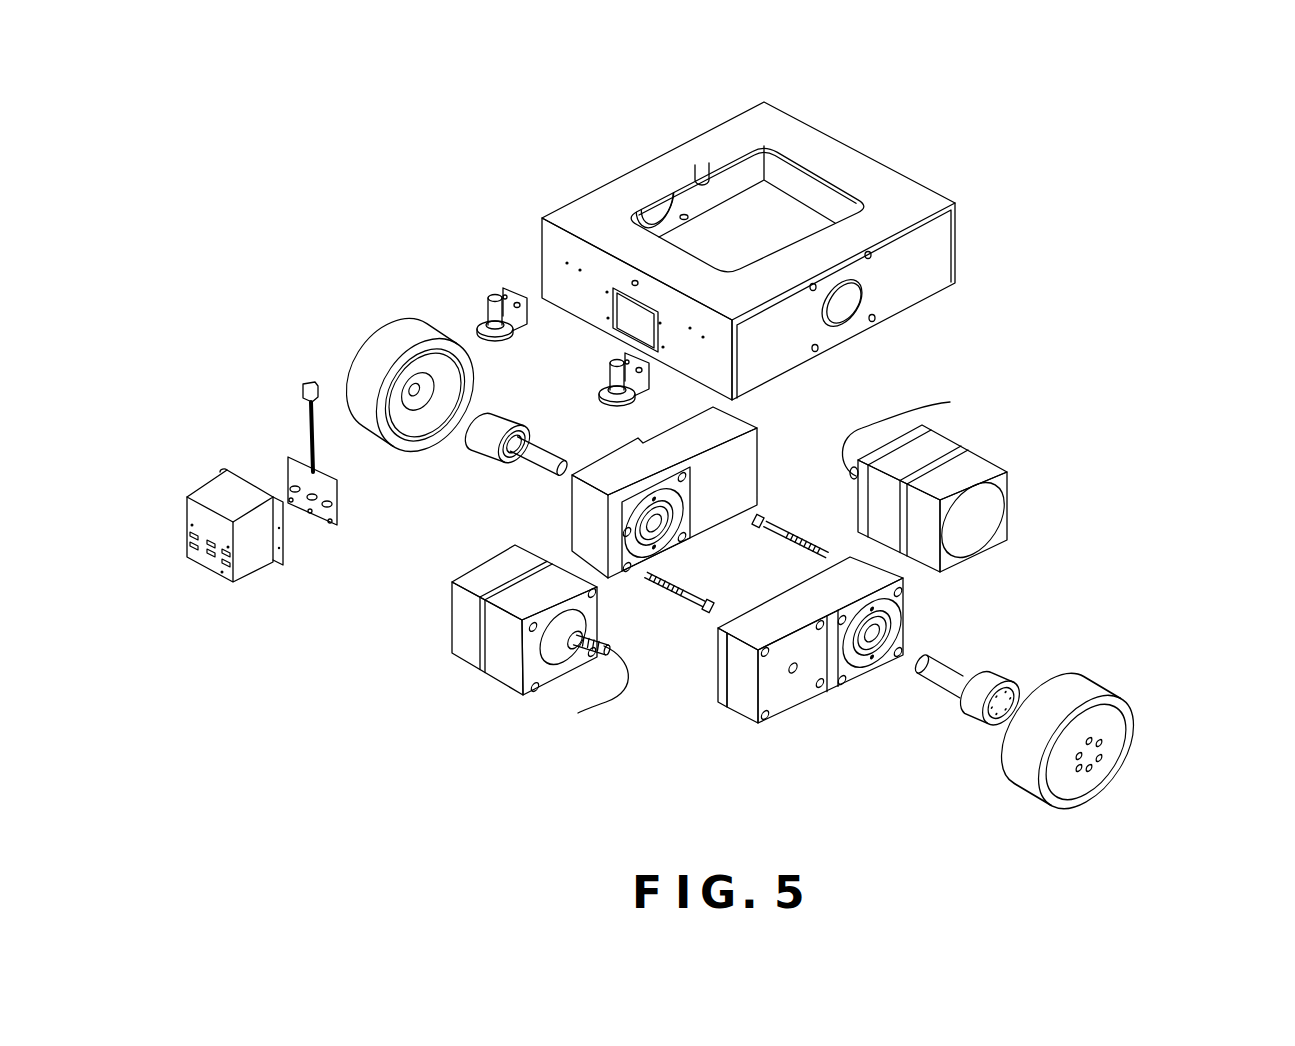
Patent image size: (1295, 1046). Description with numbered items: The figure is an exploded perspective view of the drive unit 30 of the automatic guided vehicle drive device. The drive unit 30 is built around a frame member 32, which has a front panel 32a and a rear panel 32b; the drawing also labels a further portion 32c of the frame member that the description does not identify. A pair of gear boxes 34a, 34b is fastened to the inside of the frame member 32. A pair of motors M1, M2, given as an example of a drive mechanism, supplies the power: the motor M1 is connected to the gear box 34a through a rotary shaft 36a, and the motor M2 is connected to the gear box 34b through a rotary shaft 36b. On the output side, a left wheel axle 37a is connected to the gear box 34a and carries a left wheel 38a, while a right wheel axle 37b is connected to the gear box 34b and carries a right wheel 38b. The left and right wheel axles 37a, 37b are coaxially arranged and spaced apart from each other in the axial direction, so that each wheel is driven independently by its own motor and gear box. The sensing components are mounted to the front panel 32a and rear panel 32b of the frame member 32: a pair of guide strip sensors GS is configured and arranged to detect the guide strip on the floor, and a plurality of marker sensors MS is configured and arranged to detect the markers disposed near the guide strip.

The drive unit 30 is at (1102, 183).
The frame member 32 is at (695, 128).
The front panel 32a is at (560, 253).
The rear panel 32b is at (838, 202).
The notch in housing wall 32c is at (697, 183).
The marker sensors MS is at (617, 363).
The guide strip sensors GS is at (277, 463).
The motor M1 is at (462, 650).
The motor M2 is at (1007, 478).
The gear box 34a is at (748, 698).
The gear box 34b is at (760, 425).
The rotary shaft 36a is at (578, 713).
The rotary shaft 36b is at (950, 402).
The left wheel axle 37a is at (967, 677).
The right wheel axle 37b is at (500, 465).
The left wheel 38a is at (1108, 694).
The right wheel 38b is at (387, 335).